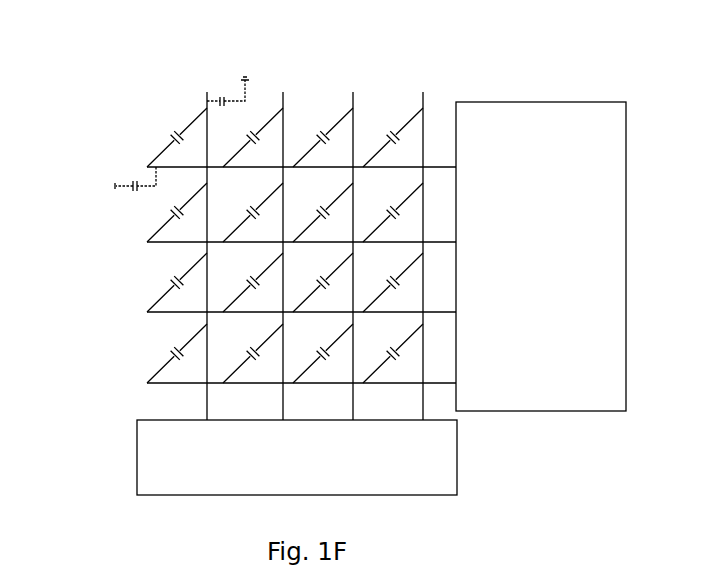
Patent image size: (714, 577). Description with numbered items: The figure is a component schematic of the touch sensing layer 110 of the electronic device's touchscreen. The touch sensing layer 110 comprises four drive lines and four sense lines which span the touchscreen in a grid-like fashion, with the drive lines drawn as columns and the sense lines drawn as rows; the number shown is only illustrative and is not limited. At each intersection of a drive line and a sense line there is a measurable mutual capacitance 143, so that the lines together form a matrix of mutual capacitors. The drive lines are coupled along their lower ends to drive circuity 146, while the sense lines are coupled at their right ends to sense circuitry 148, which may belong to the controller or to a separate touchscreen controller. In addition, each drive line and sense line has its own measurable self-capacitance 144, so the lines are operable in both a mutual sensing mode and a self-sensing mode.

The touch sensing layer 110 is at (56, 99).
The mutual capacitance 143 is at (170, 136).
The self-capacitance 144 is at (223, 105).
The drive circuity 146 is at (137, 467).
The sense circuitry 148 is at (626, 139).